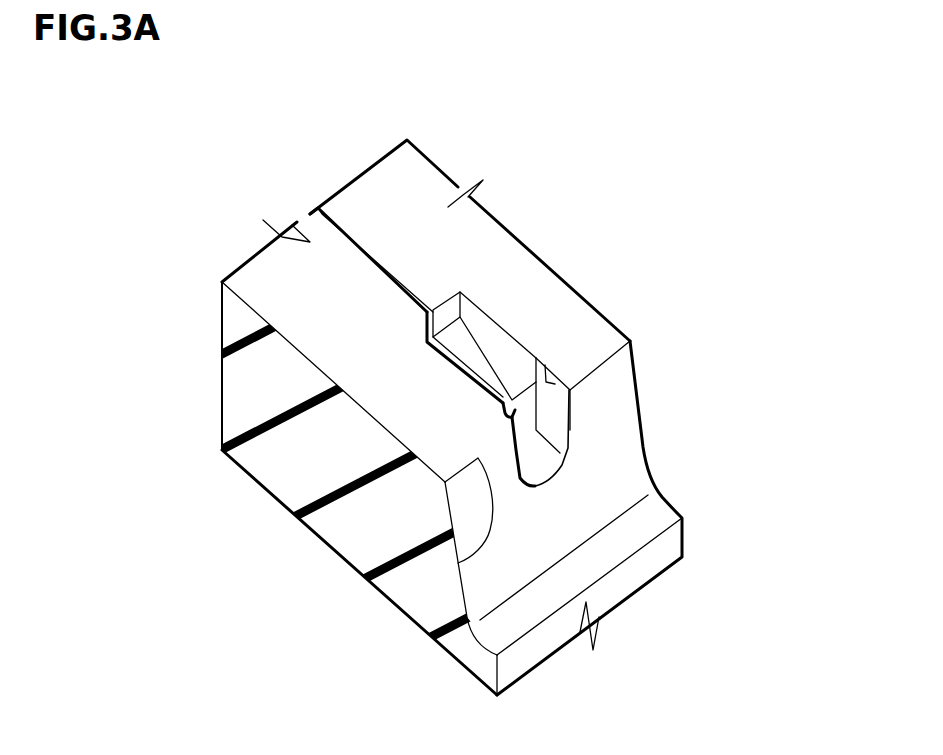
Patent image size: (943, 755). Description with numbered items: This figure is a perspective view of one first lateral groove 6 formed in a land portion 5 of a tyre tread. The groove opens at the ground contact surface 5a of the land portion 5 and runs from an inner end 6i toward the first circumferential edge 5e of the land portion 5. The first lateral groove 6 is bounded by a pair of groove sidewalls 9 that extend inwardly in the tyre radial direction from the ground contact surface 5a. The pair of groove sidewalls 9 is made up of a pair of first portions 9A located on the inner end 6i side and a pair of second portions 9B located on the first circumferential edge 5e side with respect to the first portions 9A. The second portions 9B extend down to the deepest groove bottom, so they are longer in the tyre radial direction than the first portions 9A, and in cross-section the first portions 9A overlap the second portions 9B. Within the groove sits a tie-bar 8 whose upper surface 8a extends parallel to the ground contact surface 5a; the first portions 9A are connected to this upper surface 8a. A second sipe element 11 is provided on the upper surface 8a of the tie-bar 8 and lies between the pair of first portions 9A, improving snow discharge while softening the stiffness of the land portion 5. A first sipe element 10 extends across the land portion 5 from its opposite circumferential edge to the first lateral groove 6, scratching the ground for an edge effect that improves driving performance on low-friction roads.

The land portion 5 is at (263, 380).
The ground contact surface 5a is at (293, 273).
The first circumferential edge 5e is at (458, 563).
The first lateral groove 6 is at (550, 400).
The inner end 6i is at (442, 298).
The tie-bar 8 is at (518, 410).
The upper surface 8a is at (466, 335).
The groove sidewalls 9 is at (676, 268).
The first portions 9A is at (508, 341).
The second portions 9B is at (550, 400).
The first sipe element 10 is at (355, 247).
The second sipe element 11 is at (455, 375).